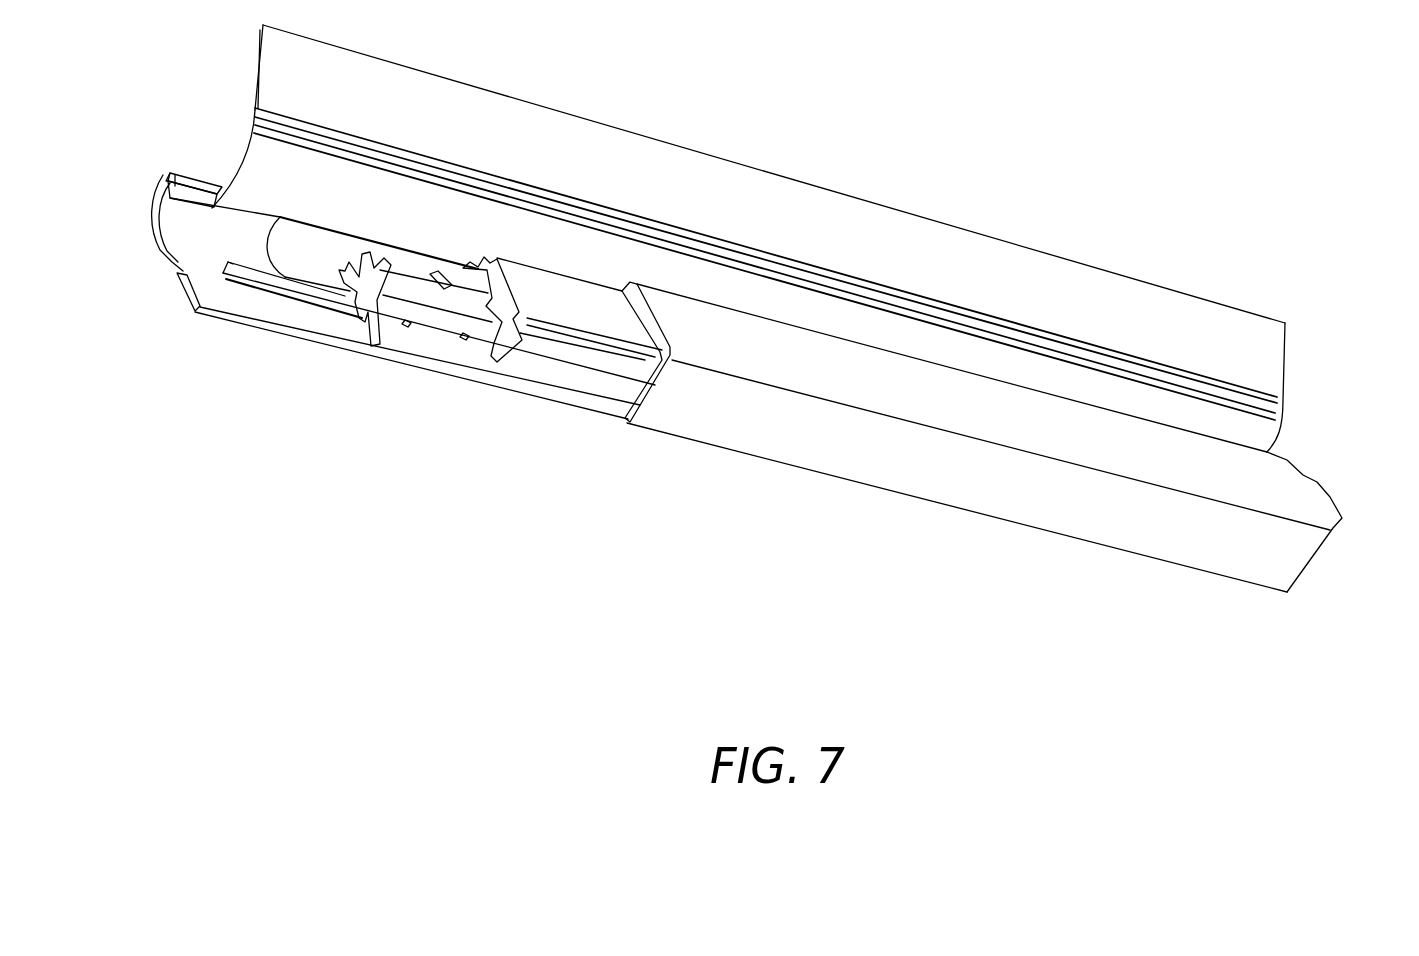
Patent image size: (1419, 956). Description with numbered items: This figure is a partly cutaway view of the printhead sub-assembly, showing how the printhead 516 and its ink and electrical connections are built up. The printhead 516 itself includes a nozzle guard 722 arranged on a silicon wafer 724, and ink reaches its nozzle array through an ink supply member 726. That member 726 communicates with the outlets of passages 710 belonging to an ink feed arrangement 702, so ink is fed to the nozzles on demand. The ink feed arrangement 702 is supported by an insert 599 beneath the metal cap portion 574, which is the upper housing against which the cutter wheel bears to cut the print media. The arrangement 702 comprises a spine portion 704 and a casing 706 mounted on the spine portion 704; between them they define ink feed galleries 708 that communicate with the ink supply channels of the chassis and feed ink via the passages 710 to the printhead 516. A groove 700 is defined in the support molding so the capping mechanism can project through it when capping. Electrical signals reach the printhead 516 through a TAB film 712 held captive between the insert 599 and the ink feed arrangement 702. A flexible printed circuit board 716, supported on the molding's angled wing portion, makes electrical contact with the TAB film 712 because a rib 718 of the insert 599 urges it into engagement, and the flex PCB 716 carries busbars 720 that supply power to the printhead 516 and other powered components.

The flexible printed circuit board 716 is at (1282, 358).
The busbars 720 is at (1285, 394).
The cap portion 574 is at (1310, 500).
The casing 706 is at (582, 378).
The rib 718 is at (168, 177).
The TAB film 712 is at (283, 249).
The printhead 516 is at (180, 278).
The insert 599 is at (192, 311).
The silicon wafer 724 is at (270, 326).
The nozzle guard 722 is at (243, 287).
The ink supply member 726 is at (337, 304).
The spine portion 704 is at (357, 350).
The groove 700 is at (495, 330).
The ink feed arrangement 702 is at (492, 264).
The ink feed galleries 708 is at (349, 261).
The passages 710 is at (445, 268).